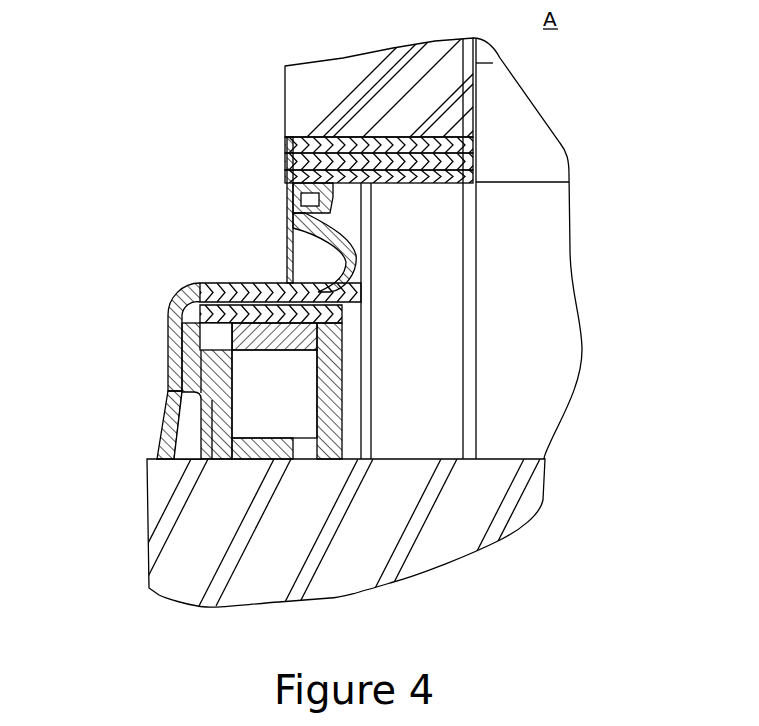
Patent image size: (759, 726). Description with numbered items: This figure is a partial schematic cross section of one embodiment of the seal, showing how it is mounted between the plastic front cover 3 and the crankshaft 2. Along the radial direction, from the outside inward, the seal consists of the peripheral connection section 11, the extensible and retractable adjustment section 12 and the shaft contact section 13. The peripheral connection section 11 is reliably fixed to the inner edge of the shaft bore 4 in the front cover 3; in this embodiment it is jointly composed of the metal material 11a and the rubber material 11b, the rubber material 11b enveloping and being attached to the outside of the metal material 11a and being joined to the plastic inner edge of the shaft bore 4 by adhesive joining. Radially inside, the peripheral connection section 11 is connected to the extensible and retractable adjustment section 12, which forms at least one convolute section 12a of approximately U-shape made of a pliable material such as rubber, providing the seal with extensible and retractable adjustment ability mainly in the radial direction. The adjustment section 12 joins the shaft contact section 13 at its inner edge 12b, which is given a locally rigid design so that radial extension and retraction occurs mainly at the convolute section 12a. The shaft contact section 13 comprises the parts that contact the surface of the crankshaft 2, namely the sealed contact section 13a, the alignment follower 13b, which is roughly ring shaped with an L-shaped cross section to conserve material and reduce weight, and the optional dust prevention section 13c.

The crankshaft 2 is at (157, 500).
The front cover 3 is at (320, 110).
The shaft bore 4 is at (283, 143).
The peripheral connection section 11 is at (156, 137).
The metal material 11a is at (395, 149).
The rubber material 11b is at (435, 134).
The extensible and retractable adjustment section 12 is at (156, 214).
The convolute section 12a is at (356, 256).
The inner edge 12b is at (323, 298).
The shaft contact section 13 is at (156, 330).
The sealed contact section 13a is at (232, 440).
The alignment follower 13b is at (327, 407).
The dust prevention section 13c is at (172, 440).